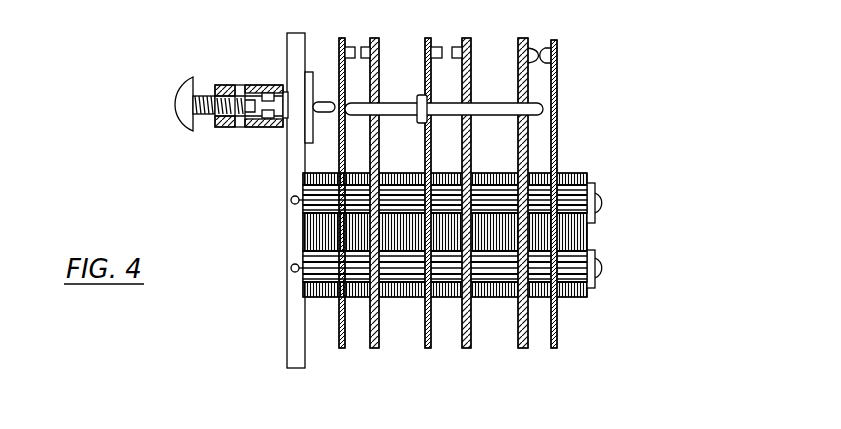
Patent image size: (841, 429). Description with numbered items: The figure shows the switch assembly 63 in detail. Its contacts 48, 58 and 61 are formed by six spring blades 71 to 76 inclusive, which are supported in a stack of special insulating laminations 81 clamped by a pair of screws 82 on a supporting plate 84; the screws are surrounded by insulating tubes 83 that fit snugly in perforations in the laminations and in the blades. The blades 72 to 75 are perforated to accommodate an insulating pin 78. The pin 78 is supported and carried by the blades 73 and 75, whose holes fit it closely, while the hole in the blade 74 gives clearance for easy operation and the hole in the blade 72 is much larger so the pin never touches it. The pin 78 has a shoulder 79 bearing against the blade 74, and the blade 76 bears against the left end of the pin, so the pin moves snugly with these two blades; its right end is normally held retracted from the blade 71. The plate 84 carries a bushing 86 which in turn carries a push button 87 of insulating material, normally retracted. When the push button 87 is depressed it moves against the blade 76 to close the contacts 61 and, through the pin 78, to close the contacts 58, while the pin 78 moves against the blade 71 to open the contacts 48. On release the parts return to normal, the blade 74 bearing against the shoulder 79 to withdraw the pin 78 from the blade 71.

The contacts 48 is at (537, 45).
The contacts 58 is at (443, 47).
The contacts 61 is at (356, 46).
The switch assembly 63 is at (252, 165).
The spring blade 71 is at (555, 349).
The spring blade 72 is at (522, 349).
The spring blade 73 is at (468, 349).
The spring blade 74 is at (430, 349).
The spring blade 75 is at (377, 349).
The spring blade 76 is at (343, 349).
The insulating pin 78 is at (494, 102).
The shoulder 79 is at (419, 95).
The insulating laminations 81 is at (589, 295).
The screws 82 is at (601, 203).
The insulating tubes 83 is at (594, 231).
The supporting plate 84 is at (291, 313).
The bushing 86 is at (248, 86).
The push button 87 is at (180, 87).